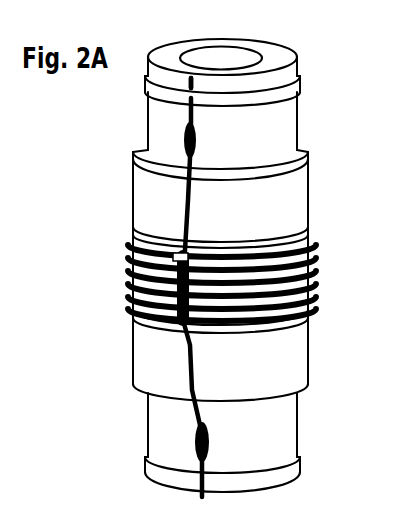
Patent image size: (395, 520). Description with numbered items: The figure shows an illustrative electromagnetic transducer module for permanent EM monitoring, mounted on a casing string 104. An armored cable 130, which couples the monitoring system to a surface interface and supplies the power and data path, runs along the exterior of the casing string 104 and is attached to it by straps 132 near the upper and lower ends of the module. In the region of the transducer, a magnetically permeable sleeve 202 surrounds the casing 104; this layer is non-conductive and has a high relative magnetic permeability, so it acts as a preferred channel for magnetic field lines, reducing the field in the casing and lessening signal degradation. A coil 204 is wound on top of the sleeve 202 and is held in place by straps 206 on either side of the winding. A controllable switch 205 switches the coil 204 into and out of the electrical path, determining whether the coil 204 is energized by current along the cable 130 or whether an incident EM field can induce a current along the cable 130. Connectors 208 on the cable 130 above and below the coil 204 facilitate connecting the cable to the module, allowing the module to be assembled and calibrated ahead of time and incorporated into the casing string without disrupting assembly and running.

The casing string 104 is at (147, 123).
The armored cable 130 is at (188, 78).
The straps 132 is at (299, 84).
The magnetically permeable sleeve 202 is at (132, 191).
The coil 204 is at (129, 266).
The controllable switch 205 is at (180, 254).
The straps 206 is at (132, 233).
The connectors 208 is at (198, 133).